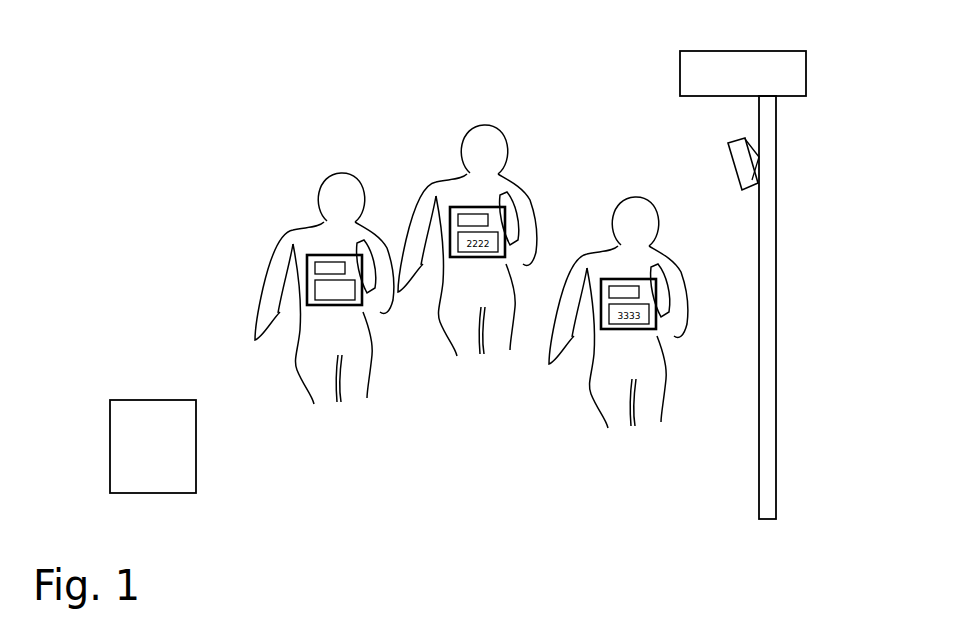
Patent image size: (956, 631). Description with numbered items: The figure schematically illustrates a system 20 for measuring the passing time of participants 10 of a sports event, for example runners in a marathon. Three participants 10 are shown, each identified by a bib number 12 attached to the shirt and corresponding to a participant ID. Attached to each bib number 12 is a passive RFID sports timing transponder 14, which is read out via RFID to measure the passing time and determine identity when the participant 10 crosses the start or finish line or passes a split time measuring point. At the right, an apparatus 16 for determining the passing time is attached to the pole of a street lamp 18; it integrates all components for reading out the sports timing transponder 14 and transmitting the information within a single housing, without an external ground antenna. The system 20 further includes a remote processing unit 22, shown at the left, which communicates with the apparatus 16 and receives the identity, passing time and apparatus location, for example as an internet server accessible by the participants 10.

The participant 10 is at (346, 171).
The bib number 12 is at (308, 292).
The passive RFID sports timing transponder 14 is at (310, 254).
The apparatus for determining a passing time 16 is at (745, 140).
The street lamp 18 is at (739, 51).
The system 20 is at (211, 122).
The remote processing unit 22 is at (152, 398).